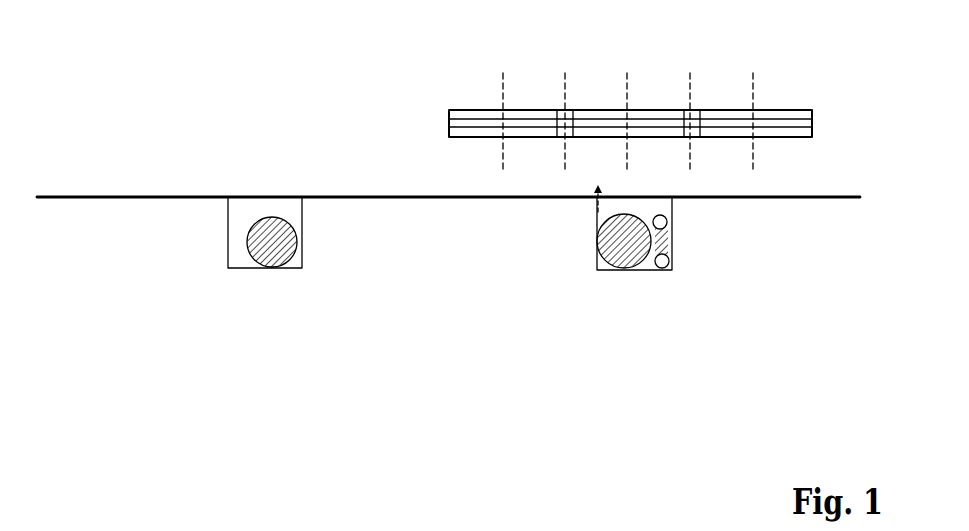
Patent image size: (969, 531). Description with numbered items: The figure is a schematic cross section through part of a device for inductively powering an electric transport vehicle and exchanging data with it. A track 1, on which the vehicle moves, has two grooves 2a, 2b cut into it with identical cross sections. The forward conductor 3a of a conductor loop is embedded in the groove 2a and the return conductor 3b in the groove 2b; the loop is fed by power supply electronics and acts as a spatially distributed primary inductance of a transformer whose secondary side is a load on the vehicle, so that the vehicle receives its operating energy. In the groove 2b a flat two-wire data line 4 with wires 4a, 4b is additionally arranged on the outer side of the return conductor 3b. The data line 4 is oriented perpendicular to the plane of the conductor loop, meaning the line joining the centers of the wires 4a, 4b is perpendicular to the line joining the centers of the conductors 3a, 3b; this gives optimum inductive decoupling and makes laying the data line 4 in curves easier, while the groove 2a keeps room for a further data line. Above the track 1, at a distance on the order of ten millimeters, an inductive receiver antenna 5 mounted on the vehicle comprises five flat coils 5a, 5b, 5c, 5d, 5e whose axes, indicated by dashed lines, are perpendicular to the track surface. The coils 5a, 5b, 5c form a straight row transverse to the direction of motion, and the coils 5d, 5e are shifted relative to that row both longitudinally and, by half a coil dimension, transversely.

The track 1 is at (133, 233).
The inductive receiver antenna 5 is at (416, 82).
The flat coil 5a is at (478, 108).
The flat coil 5b is at (625, 108).
The flat coil 5c is at (802, 108).
The flat coil 5d is at (567, 108).
The flat coil 5e is at (690, 108).
The groove 2a is at (235, 255).
The forward conductor 3a is at (270, 273).
The groove 2b is at (593, 212).
The return conductor 3b is at (615, 272).
The two-wire data line 4 is at (660, 295).
The wire 4a is at (672, 217).
The wire 4b is at (675, 268).